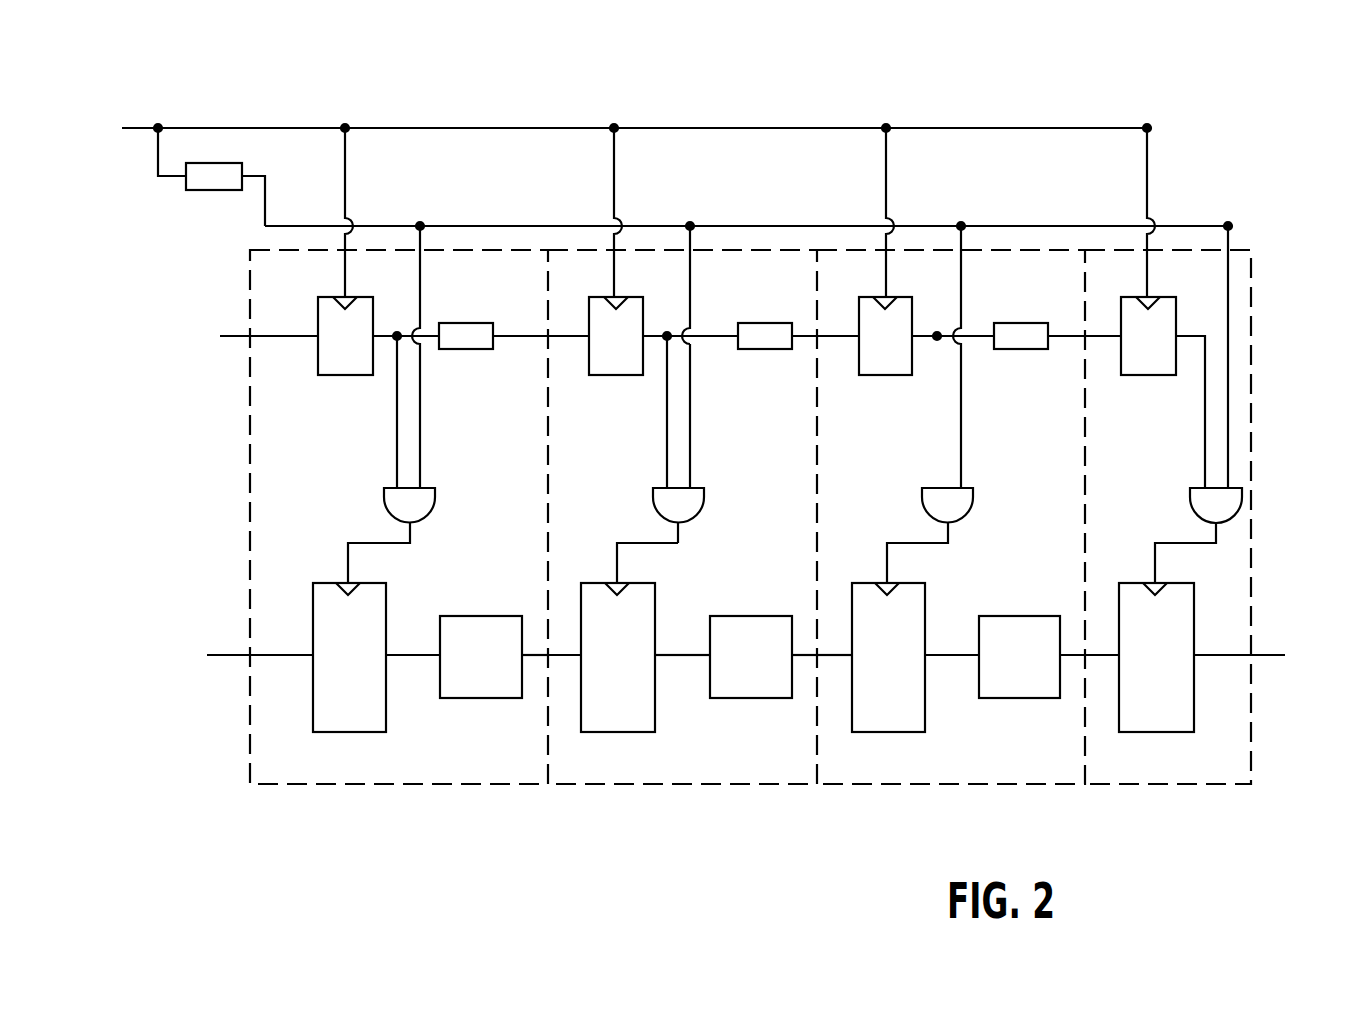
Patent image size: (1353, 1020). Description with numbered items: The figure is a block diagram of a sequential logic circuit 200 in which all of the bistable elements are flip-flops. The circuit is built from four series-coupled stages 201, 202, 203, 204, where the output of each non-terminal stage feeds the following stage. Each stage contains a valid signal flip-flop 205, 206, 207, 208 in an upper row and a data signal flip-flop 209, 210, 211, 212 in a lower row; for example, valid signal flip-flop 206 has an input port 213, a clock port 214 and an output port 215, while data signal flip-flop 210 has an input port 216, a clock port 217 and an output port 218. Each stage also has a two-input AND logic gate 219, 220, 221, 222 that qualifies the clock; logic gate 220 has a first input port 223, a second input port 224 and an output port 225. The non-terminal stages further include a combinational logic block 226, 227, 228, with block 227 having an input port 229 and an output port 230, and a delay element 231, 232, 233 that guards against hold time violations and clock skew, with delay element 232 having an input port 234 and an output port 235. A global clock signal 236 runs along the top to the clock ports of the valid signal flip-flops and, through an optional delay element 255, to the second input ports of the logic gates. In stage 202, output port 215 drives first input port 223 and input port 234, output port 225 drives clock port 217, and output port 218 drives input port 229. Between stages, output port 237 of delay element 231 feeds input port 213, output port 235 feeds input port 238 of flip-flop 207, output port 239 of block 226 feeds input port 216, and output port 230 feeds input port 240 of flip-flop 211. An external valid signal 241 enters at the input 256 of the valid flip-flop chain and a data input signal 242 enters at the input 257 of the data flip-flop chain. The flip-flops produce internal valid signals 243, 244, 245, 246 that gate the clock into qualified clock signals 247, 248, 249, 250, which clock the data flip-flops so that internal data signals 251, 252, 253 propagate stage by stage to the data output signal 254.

The sequential logic circuit 200 is at (854, 83).
The first stage 201 is at (444, 770).
The second stage 202 is at (680, 770).
The third stage 203 is at (951, 770).
The terminal stage 204 is at (1159, 770).
The valid signal flip-flop 205 is at (368, 368).
The valid signal flip-flop 206 is at (639, 368).
The valid signal flip-flop 207 is at (908, 368).
The valid signal flip-flop 208 is at (1171, 368).
The data signal flip-flop 209 is at (378, 720).
The data signal flip-flop 210 is at (644, 720).
The data signal flip-flop 211 is at (915, 720).
The data signal flip-flop 212 is at (1189, 720).
The input port 213 is at (568, 323).
The clock port 214 is at (633, 213).
The output port 215 is at (666, 317).
The input port 216 is at (561, 638).
The clock port 217 is at (635, 572).
The output port 218 is at (674, 641).
The logic gate 219 is at (427, 514).
The logic gate 220 is at (696, 514).
The logic gate 221 is at (965, 514).
The logic gate 222 is at (1233, 514).
The first input port 223 is at (649, 410).
The second input port 224 is at (710, 416).
The output port 225 is at (702, 533).
The combinational logic block 226 is at (509, 690).
The combinational logic block 227 is at (779, 690).
The combinational logic block 228 is at (1037, 690).
The input port 229 is at (692, 668).
The output port 230 is at (810, 668).
The delay element 231 is at (483, 346).
The delay element 232 is at (782, 346).
The delay element 233 is at (1038, 346).
The input port 234 is at (714, 348).
The output port 235 is at (812, 348).
The global clock signal 236 is at (615, 133).
The output port 237 is at (520, 349).
The input port 238 is at (840, 322).
The output port 239 is at (540, 668).
The input port 240 is at (832, 639).
The valid signal 241 is at (226, 335).
The data input signal 242 is at (213, 655).
The internal valid signal 243 is at (414, 323).
The internal valid signal 244 is at (686, 322).
The internal valid signal 245 is at (950, 323).
The internal valid signal 246 is at (1194, 399).
The qualified clock signal 247 is at (386, 560).
The qualified clock signal 248 is at (654, 556).
The qualified clock signal 249 is at (914, 558).
The qualified clock signal 250 is at (1173, 558).
The internal data signal 251 is at (538, 637).
The internal data signal 252 is at (810, 637).
The internal data signal 253 is at (1077, 637).
The data output signal 254 is at (1260, 653).
The delay element 255 is at (231, 188).
The input 256 is at (294, 323).
The input 257 is at (286, 638).